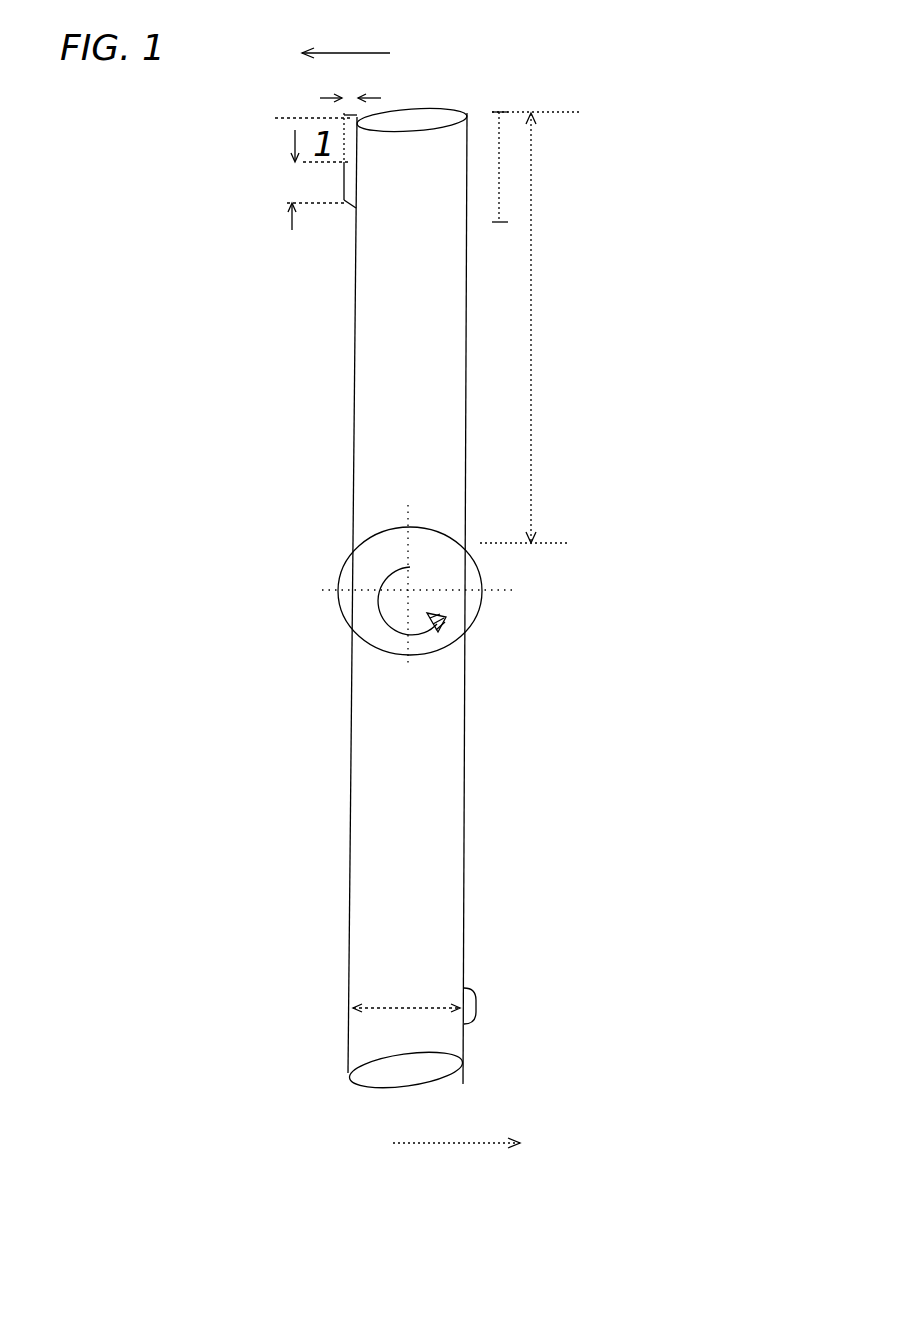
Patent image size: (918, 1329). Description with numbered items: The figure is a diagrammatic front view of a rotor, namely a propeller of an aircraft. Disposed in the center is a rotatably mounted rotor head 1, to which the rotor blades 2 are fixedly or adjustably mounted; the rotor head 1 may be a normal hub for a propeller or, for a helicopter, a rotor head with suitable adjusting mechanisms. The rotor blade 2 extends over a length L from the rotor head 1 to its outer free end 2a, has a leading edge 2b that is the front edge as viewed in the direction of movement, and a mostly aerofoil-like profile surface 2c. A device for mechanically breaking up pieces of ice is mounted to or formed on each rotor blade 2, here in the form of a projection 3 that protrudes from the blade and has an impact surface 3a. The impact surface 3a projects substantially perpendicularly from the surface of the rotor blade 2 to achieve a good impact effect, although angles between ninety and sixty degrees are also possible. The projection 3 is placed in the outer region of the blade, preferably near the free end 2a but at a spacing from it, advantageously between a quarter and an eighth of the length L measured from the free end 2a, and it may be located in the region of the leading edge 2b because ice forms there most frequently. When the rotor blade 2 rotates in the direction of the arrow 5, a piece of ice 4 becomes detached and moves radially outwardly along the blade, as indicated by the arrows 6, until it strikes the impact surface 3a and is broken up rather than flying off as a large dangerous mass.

The rotor head 1 is at (457, 597).
The rotor blade 2 is at (417, 626).
The free end 2a is at (403, 119).
The leading edge 2b is at (353, 352).
The profile surface 2c is at (407, 586).
The projection 3 is at (413, 568).
The impact surface 3a is at (350, 203).
The piece of ice 4 is at (426, 545).
The arrow 5 is at (411, 605).
The arrows 6 is at (310, 198).
The length of the rotor blade L is at (530, 327).